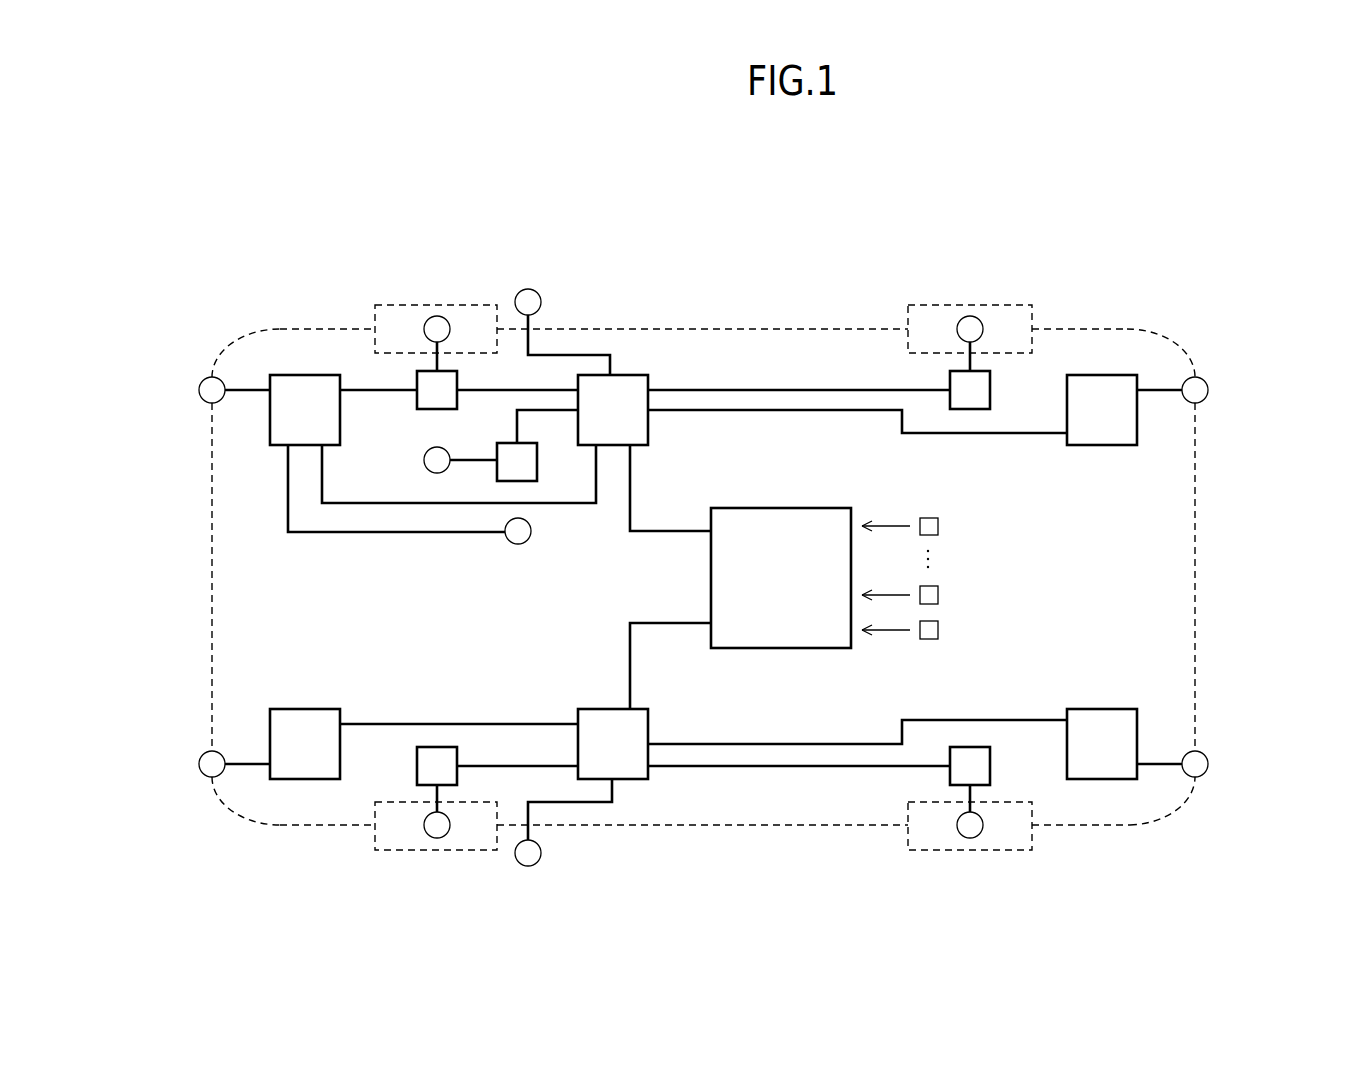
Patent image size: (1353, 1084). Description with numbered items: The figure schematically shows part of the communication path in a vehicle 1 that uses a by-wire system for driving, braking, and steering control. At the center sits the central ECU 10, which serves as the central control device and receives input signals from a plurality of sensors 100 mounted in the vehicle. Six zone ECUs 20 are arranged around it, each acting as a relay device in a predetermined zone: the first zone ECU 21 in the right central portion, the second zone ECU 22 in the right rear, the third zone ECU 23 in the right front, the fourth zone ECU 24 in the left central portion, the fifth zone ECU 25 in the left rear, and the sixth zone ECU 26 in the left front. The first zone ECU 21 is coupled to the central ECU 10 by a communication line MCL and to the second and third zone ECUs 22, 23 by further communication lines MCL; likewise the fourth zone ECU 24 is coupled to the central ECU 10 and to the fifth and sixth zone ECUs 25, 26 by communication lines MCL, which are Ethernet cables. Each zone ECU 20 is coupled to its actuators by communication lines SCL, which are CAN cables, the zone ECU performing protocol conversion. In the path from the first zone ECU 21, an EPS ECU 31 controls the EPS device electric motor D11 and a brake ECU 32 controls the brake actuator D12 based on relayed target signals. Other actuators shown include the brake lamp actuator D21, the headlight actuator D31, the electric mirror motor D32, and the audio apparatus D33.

The vehicle 1 is at (1173, 208).
The central ECU 10 is at (818, 518).
The sensors 100 is at (938, 527).
The zone ECU 20 is at (723, 521).
The first zone ECU 21 is at (637, 427).
The second zone ECU 22 is at (1102, 437).
The third zone ECU 23 is at (303, 387).
The fourth zone ECU 24 is at (650, 725).
The fifth zone ECU 25 is at (1102, 718).
The sixth zone ECU 26 is at (304, 722).
The EPS ECU 31 is at (510, 443).
The brake ECU 32 is at (425, 390).
The electric motor for EPS device D11 is at (424, 467).
The brake actuator D12 is at (436, 318).
The actuator for brake lamp D21 is at (1208, 390).
The actuator for headlight D31 is at (198, 390).
The electric motor for electric mirror D32 is at (530, 289).
The audio apparatus D33 is at (518, 545).
The communication line SCL is at (248, 387).
The communication line MCL is at (575, 508).